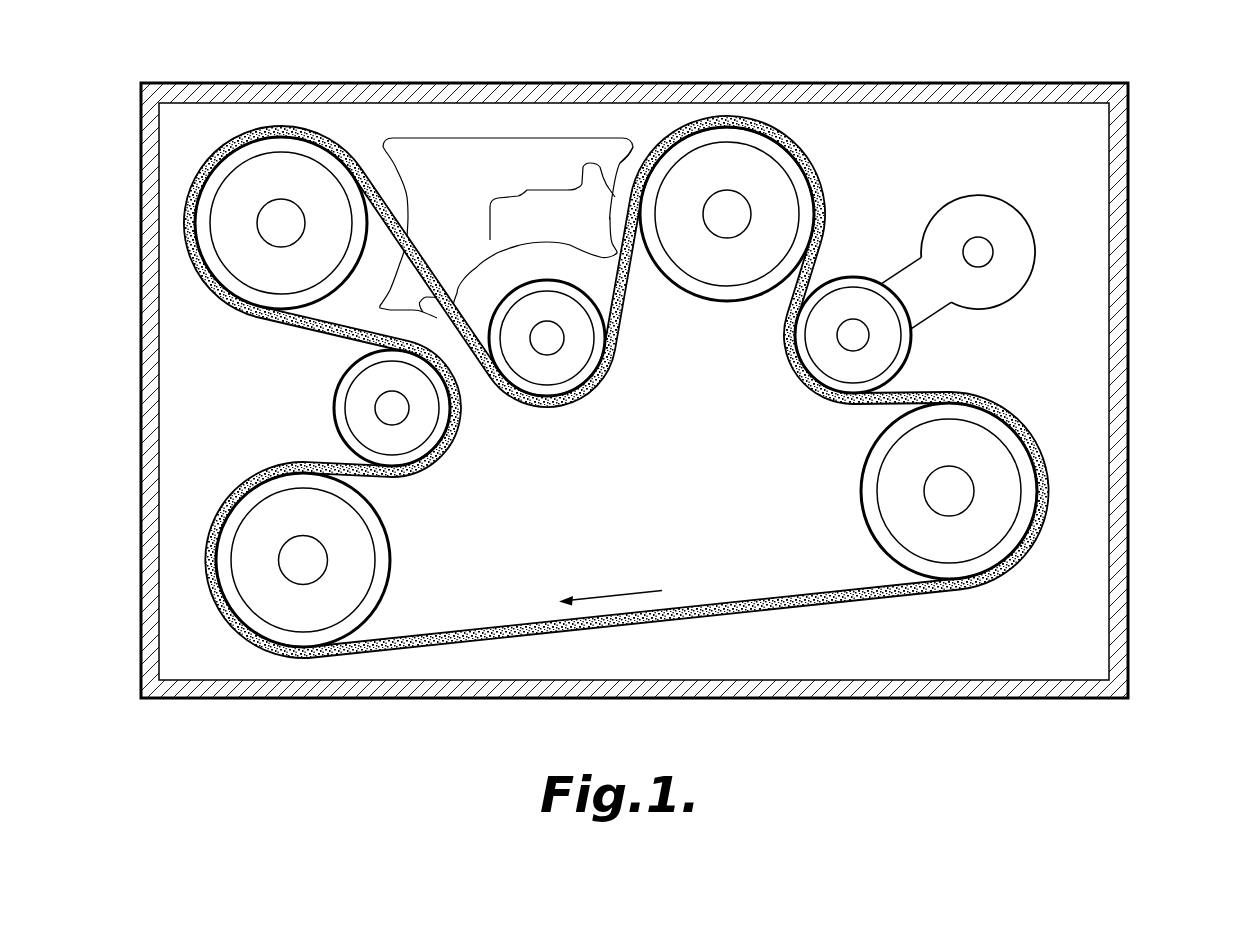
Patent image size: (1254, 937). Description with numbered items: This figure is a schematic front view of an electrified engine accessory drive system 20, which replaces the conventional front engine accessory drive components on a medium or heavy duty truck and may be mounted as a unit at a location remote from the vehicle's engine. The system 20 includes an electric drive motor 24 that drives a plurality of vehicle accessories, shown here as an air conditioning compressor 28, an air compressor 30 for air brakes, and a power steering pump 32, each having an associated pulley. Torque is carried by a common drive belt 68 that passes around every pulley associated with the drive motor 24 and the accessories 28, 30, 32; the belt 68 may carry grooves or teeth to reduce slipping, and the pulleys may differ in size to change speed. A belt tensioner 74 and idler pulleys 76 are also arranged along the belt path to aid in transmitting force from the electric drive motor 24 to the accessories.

The electrified engine accessory drive (EEAD) system 20 is at (1152, 161).
The electric drive motor 24 is at (1027, 411).
The air conditioning compressor 28 is at (345, 134).
The air compressor 30 is at (805, 136).
The power steering pump 32 is at (197, 513).
The common drive belt 68 is at (827, 598).
The belt tensioner 74 is at (879, 265).
The idler pulleys 76 is at (347, 392).